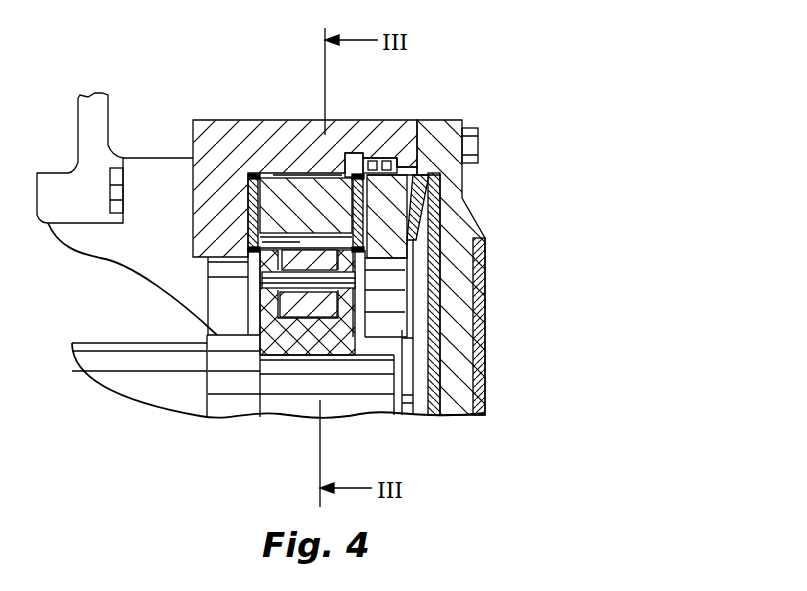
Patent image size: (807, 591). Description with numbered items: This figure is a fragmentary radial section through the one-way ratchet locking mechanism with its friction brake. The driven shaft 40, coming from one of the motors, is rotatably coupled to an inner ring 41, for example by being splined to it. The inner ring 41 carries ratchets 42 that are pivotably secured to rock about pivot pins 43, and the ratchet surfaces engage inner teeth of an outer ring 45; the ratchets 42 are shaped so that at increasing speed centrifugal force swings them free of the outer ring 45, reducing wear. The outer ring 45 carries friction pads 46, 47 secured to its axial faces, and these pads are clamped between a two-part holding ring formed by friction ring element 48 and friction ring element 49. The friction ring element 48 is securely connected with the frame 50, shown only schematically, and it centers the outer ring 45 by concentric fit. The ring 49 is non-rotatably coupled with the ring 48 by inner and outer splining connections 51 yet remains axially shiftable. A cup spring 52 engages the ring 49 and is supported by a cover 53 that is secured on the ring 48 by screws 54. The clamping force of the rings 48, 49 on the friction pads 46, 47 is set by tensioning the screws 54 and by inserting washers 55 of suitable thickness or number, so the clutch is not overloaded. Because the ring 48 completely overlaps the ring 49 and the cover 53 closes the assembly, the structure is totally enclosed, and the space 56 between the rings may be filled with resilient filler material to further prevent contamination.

The driven shaft 40 is at (228, 387).
The inner ring 41 is at (305, 335).
The ratchets 42 is at (278, 298).
The pivot pins 43 is at (262, 275).
The outer ring 45 is at (303, 190).
The friction pad 46 is at (257, 176).
The friction pad 47 is at (338, 177).
The friction ring element 48 is at (216, 133).
The friction ring element 49 is at (410, 180).
The frame 50 is at (75, 165).
The splining connections 51 is at (390, 160).
The cup spring 52 is at (440, 227).
The cover 53 is at (467, 217).
The screws 54 is at (476, 145).
The washers 55 is at (440, 283).
The space 56 is at (358, 167).